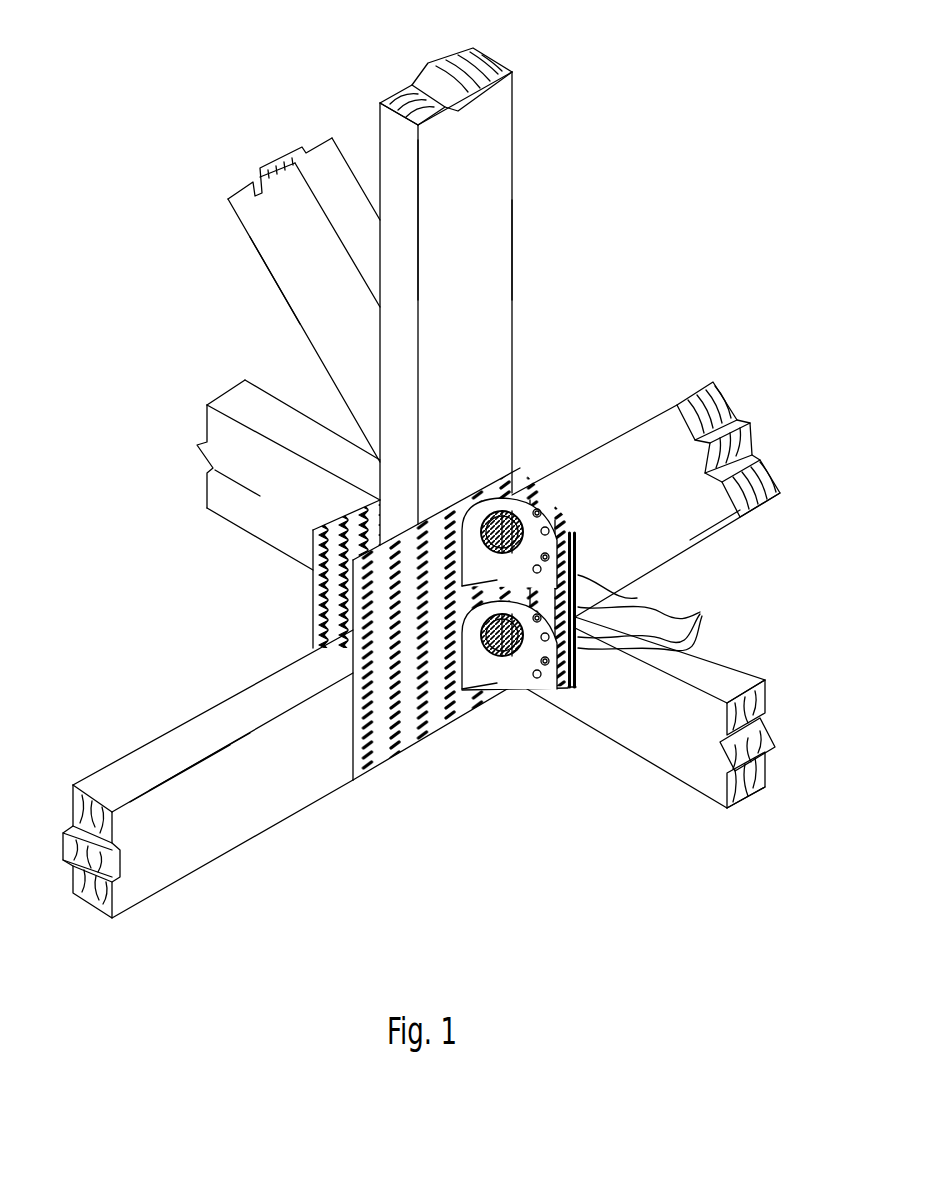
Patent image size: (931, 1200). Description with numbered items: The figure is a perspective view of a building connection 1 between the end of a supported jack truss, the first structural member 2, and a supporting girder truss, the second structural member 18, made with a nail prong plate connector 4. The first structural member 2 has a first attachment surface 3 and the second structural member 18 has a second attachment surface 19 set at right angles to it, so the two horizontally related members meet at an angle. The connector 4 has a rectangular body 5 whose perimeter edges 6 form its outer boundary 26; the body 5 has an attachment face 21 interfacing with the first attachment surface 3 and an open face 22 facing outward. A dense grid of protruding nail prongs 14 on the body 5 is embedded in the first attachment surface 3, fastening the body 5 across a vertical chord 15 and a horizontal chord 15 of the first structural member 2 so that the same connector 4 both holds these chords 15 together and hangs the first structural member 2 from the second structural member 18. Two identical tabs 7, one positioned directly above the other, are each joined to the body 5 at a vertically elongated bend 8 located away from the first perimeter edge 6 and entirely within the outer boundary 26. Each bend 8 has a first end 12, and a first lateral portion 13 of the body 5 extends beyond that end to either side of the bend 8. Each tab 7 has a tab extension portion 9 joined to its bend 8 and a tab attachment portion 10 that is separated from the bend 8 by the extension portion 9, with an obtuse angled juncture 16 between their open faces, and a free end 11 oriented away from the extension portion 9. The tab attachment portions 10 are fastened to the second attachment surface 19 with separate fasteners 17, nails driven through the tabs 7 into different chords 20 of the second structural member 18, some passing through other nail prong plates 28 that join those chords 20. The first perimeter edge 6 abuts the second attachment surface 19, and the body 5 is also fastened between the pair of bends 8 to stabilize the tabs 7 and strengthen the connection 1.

The building connection 1 is at (450, 475).
The first structural member 2 is at (515, 70).
The first attachment surface 3 is at (496, 246).
The nail prong plate connector 4 is at (470, 559).
The body 5 is at (312, 595).
The first perimeter edge 6 is at (520, 492).
The first tab 7 is at (573, 505).
The first bend 8 is at (470, 500).
The first tab extension portion 9 is at (520, 490).
The first tab attachment portion 10 is at (540, 495).
The first free end 11 is at (578, 545).
The first end 12 is at (497, 490).
The first lateral portion 13 is at (507, 488).
The nail prongs 14 is at (372, 505).
The chord 15 is at (512, 190).
The obtuse angled juncture 16 is at (578, 553).
The separate fasteners 17 is at (617, 414).
The second structural member 18 is at (227, 197).
The second attachment surface 19 is at (298, 284).
The chord 20 is at (321, 140).
The attachment face 21 is at (320, 642).
The open face 22 is at (432, 712).
The outer boundary 26 is at (410, 745).
The nail prong plates 28 is at (565, 697).